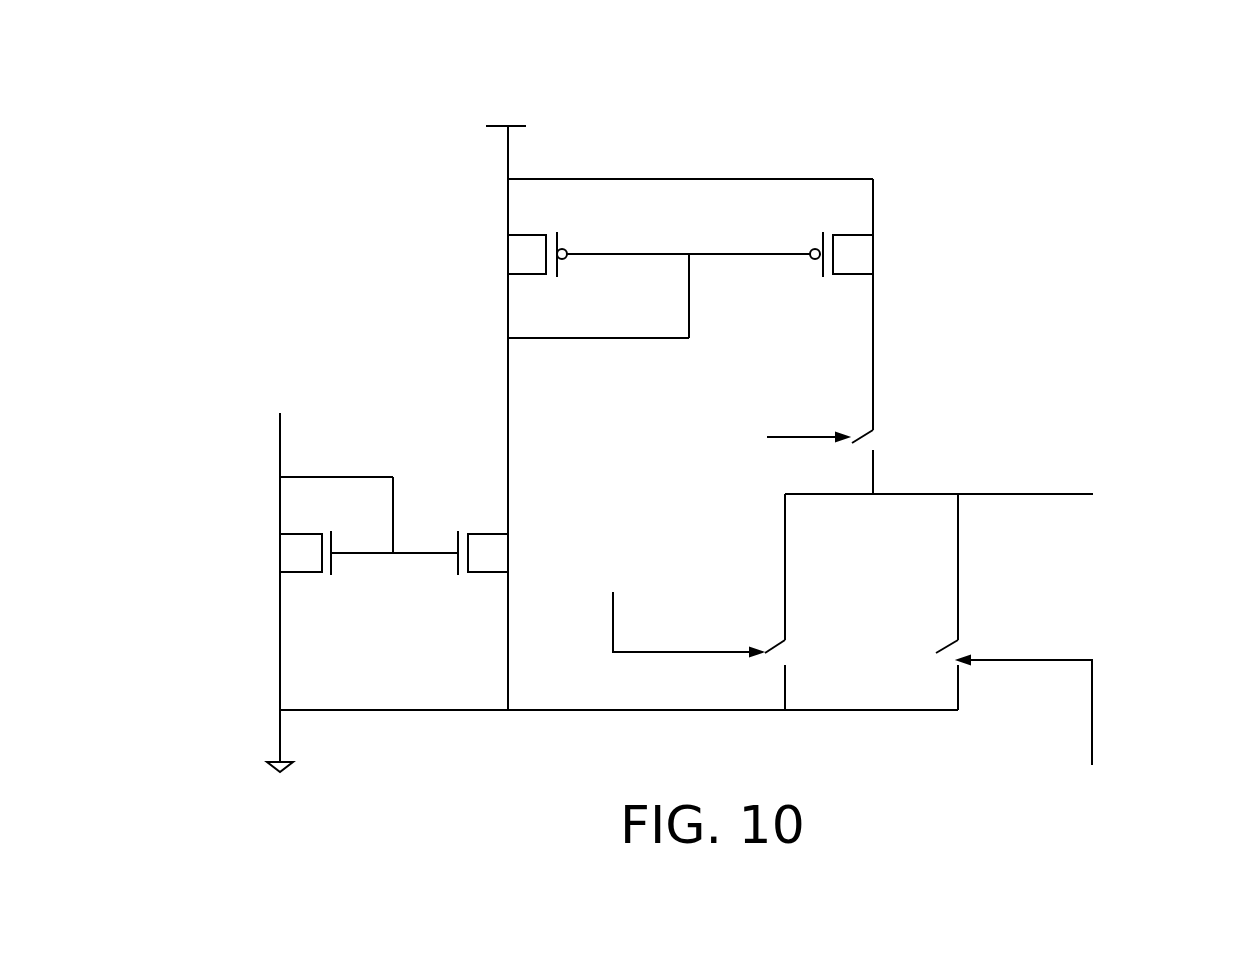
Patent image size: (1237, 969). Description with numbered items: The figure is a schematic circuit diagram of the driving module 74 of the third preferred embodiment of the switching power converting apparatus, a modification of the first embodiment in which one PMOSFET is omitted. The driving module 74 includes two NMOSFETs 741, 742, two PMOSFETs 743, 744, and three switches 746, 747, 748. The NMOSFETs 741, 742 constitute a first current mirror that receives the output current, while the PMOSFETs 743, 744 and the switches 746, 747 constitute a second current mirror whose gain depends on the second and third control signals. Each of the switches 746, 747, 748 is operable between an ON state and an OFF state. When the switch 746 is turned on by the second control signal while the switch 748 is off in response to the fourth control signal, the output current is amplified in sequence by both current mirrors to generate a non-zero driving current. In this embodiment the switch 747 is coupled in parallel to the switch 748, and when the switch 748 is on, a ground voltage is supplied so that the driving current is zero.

The driving module 74 is at (710, 157).
The NMOSFET 741 is at (298, 534).
The NMOSFET 742 is at (488, 534).
The PMOSFET 743 is at (527, 235).
The PMOSFET 744 is at (842, 233).
The switch 746 is at (862, 432).
The switch 747 is at (945, 652).
The switch 748 is at (777, 648).